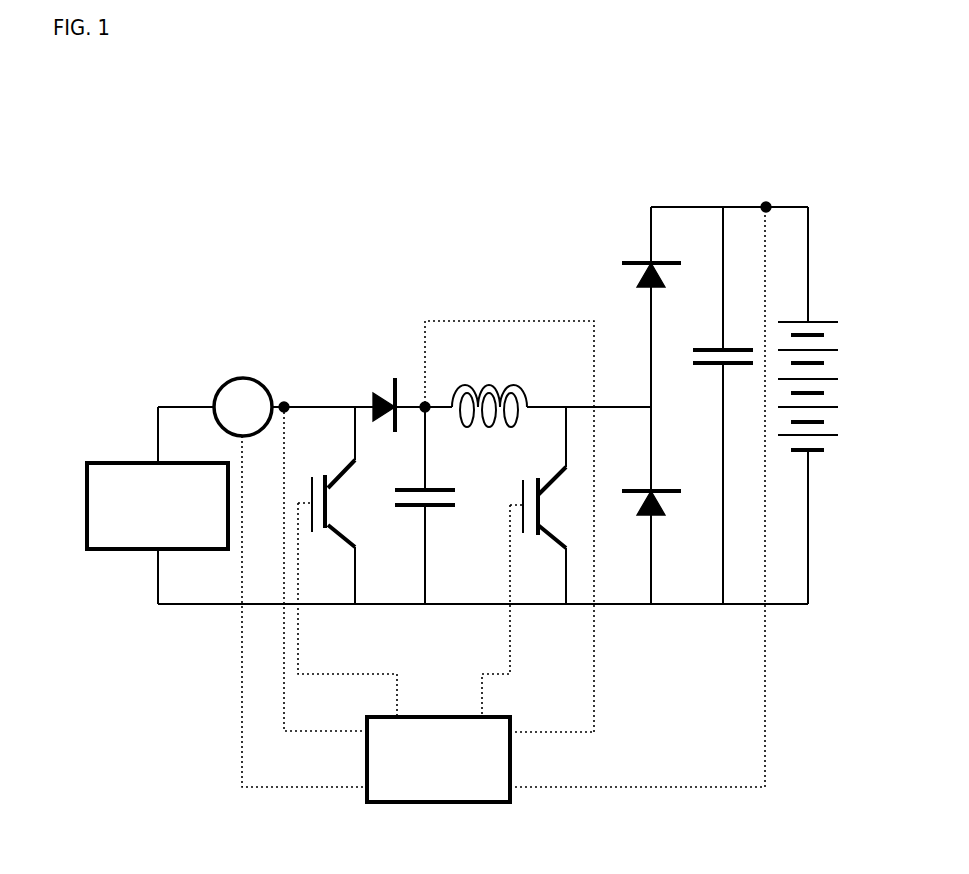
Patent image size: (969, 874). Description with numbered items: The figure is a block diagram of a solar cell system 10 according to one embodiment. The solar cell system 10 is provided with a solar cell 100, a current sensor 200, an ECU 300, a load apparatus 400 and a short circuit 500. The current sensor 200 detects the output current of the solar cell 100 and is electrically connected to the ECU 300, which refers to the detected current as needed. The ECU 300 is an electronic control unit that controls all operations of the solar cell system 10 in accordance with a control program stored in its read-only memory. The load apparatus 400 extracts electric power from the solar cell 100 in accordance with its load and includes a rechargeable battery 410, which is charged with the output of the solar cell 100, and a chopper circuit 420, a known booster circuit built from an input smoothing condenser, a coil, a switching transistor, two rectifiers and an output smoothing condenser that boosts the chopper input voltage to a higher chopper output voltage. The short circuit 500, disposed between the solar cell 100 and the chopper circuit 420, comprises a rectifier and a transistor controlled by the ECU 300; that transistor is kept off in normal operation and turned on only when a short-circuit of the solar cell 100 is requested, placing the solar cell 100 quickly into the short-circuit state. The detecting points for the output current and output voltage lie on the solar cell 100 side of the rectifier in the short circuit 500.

The solar cell system 10 is at (827, 178).
The solar cell 100 is at (87, 463).
The current sensor 200 is at (228, 378).
The ECU 300 is at (367, 802).
The load apparatus 400 is at (596, 241).
The rechargeable battery 410 is at (825, 481).
The chopper circuit 420 is at (576, 288).
The short circuit 500 is at (340, 366).